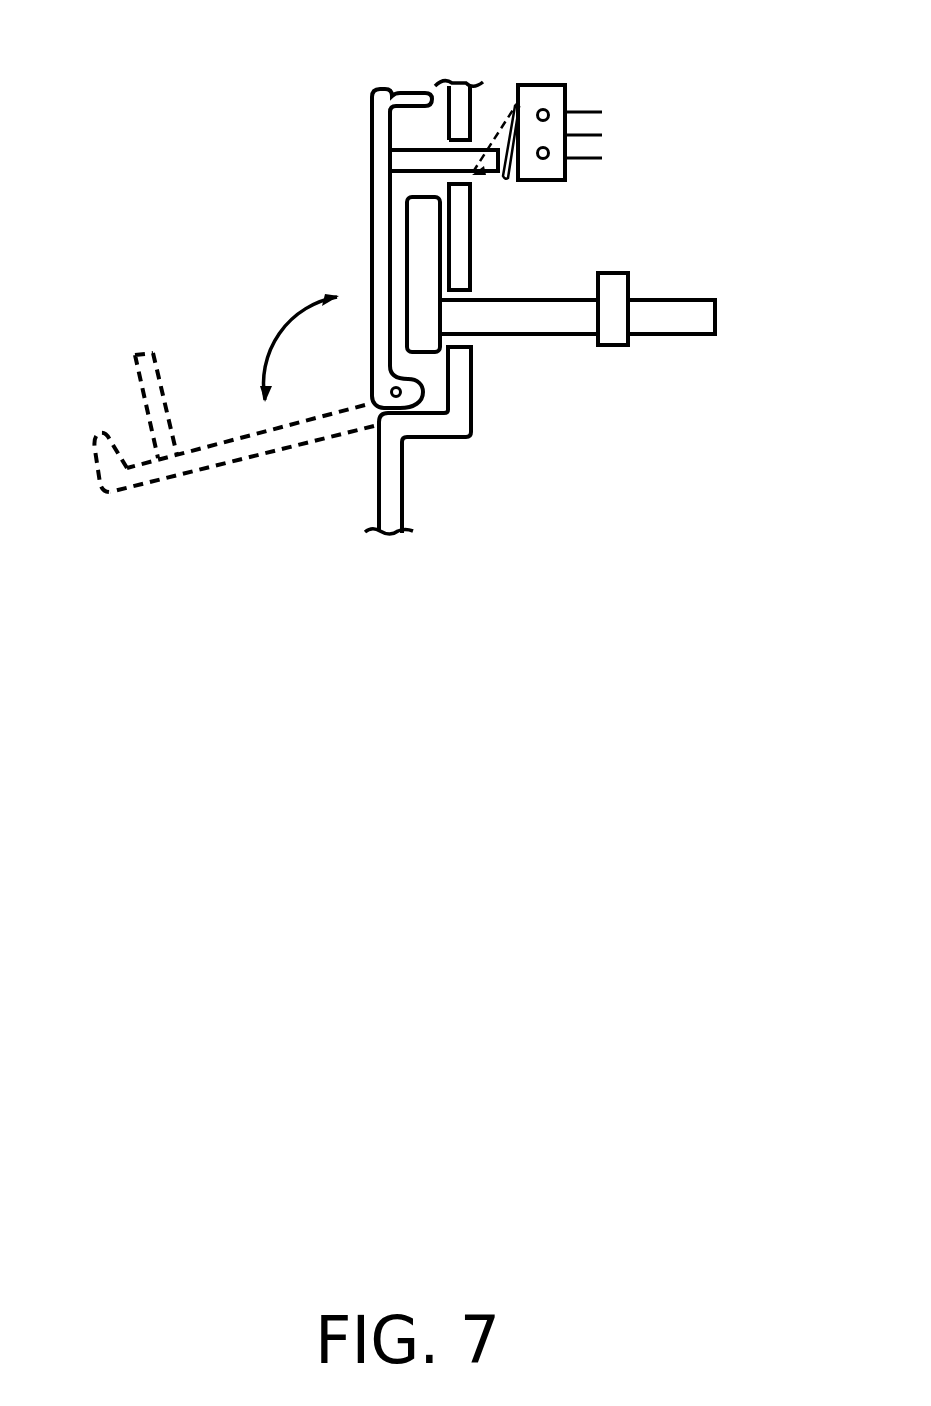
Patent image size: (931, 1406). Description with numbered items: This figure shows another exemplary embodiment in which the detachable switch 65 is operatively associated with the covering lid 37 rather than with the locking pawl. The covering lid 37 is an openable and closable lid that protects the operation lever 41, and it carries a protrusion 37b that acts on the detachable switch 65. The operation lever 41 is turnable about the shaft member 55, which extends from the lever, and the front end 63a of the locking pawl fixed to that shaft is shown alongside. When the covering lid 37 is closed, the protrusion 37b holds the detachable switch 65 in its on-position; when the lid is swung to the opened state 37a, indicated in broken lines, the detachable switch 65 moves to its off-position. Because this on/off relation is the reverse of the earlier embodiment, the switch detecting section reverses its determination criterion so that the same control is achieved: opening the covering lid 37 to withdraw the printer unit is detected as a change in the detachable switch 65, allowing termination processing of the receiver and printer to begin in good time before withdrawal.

The covering lid 37 is at (378, 142).
The opened state of covering lid 37a is at (202, 470).
The protrusion 37b is at (418, 158).
The operation lever 41 is at (420, 258).
The shaft member 55 is at (540, 320).
The front end of locking pawl 63a is at (612, 284).
The detachable switch 65 is at (546, 92).